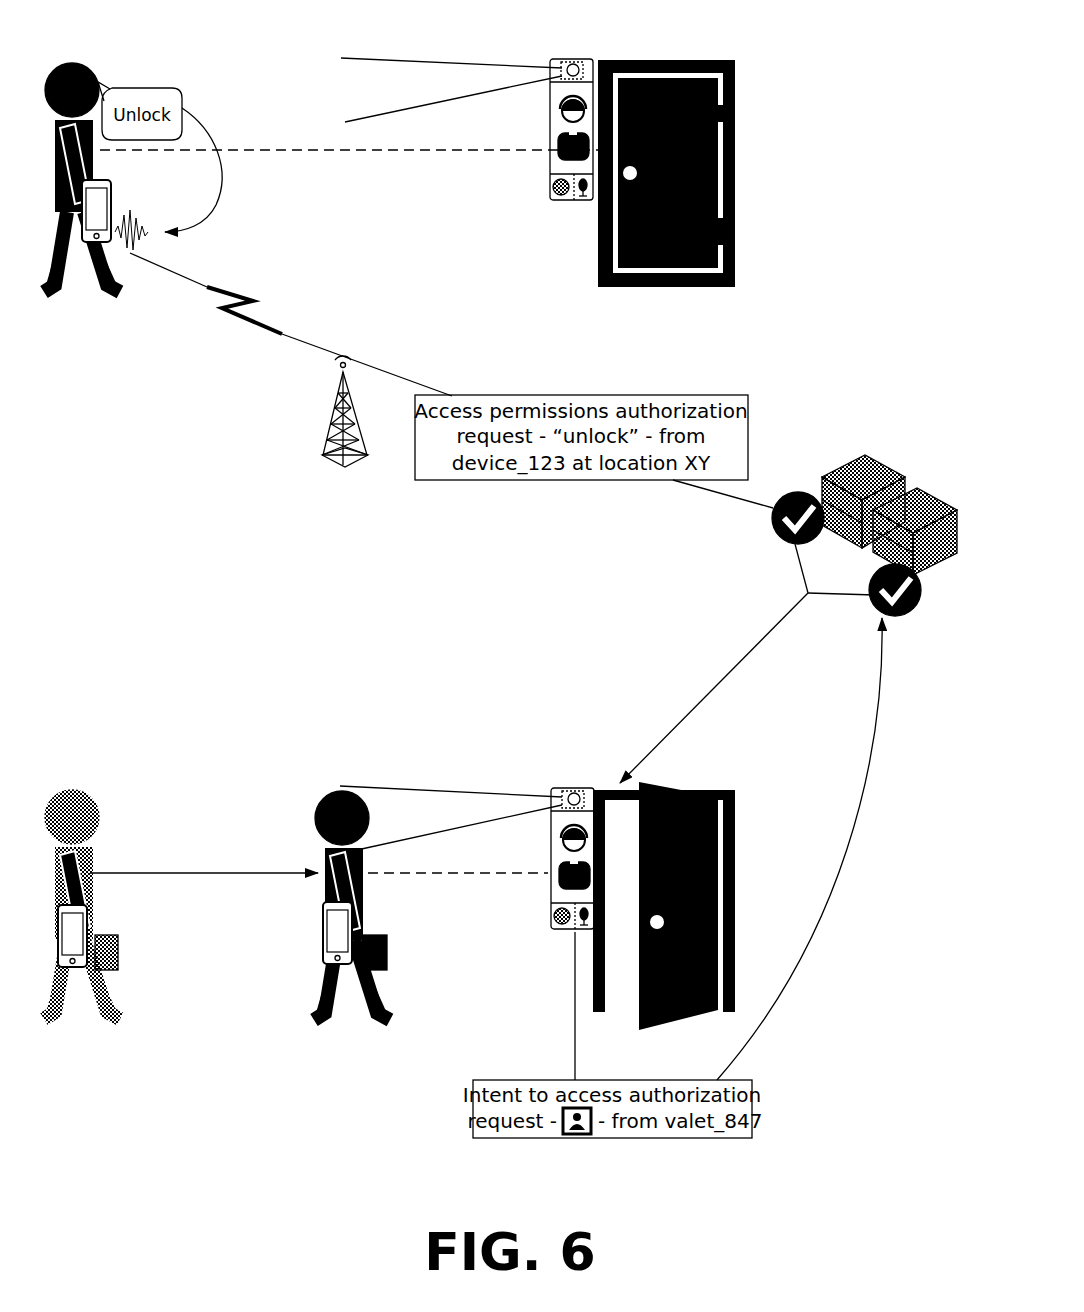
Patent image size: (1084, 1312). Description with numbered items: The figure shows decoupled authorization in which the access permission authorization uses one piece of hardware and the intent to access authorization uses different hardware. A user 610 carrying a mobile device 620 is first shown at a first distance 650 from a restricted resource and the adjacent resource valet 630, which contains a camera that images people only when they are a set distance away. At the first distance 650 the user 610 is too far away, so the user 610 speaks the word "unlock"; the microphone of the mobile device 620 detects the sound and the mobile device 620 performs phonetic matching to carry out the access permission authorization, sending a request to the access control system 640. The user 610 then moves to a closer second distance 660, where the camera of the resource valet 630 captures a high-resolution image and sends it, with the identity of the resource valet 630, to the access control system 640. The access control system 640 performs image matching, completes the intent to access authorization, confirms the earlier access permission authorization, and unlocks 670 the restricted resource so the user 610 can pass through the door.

The user 610 is at (66, 62).
The mobile device 620 is at (112, 193).
The resource valet 630 is at (578, 60).
The access control system 640 is at (897, 483).
The first distance 650 is at (312, 153).
The second distance 660 is at (432, 875).
The unlock 670 is at (704, 704).